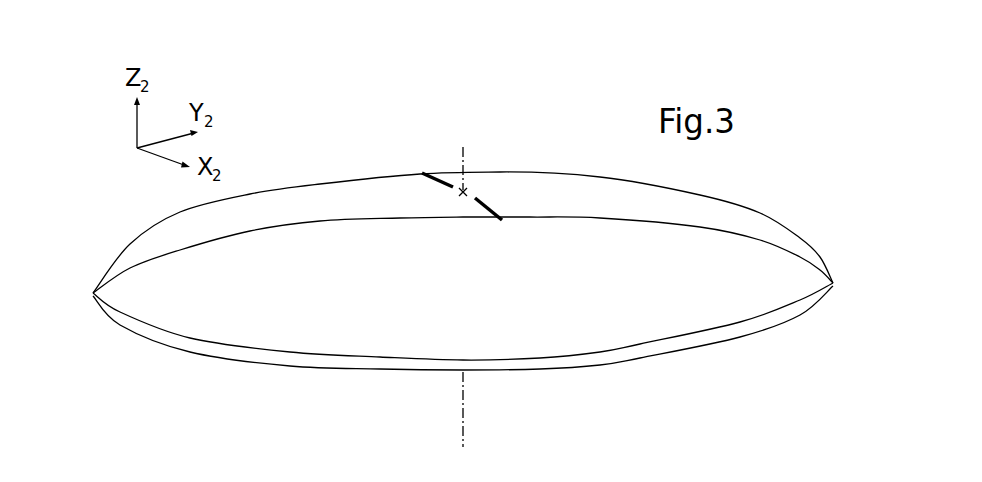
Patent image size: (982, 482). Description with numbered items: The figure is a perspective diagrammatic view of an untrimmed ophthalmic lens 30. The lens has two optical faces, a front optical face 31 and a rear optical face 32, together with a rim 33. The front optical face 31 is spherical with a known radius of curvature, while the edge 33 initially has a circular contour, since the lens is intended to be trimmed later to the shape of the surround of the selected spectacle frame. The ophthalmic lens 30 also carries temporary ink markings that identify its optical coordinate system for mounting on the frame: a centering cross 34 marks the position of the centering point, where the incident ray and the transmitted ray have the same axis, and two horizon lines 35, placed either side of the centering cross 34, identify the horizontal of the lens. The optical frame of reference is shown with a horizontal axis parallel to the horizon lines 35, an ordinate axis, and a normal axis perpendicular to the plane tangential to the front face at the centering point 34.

The ophthalmic lens 30 is at (463, 279).
The front optical face 31 is at (342, 192).
The rear optical face 32 is at (380, 371).
The rim 33 is at (593, 355).
The centering cross 34 is at (470, 192).
The horizon lines 35 is at (484, 197).